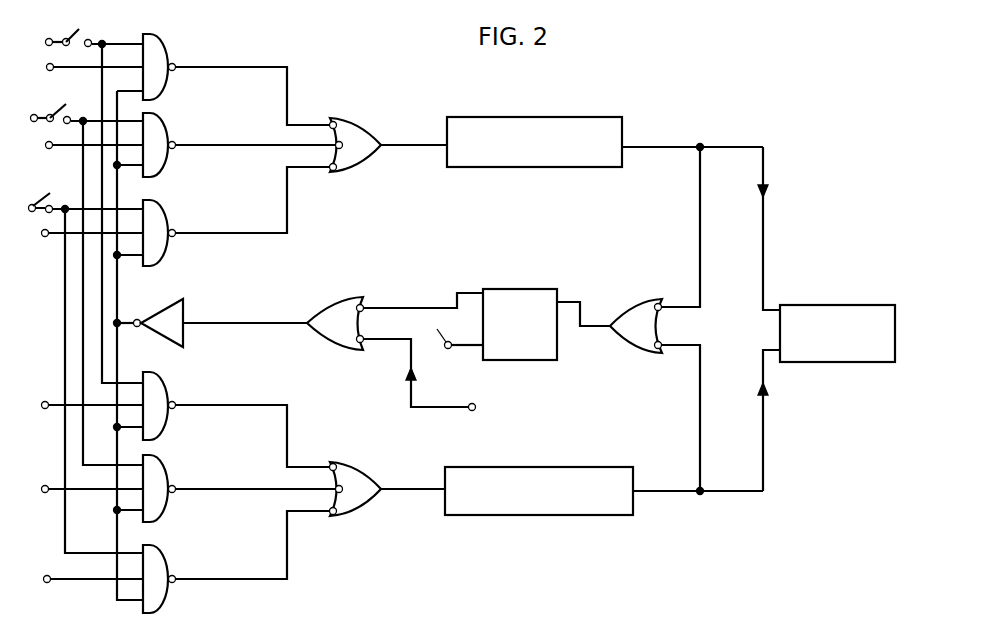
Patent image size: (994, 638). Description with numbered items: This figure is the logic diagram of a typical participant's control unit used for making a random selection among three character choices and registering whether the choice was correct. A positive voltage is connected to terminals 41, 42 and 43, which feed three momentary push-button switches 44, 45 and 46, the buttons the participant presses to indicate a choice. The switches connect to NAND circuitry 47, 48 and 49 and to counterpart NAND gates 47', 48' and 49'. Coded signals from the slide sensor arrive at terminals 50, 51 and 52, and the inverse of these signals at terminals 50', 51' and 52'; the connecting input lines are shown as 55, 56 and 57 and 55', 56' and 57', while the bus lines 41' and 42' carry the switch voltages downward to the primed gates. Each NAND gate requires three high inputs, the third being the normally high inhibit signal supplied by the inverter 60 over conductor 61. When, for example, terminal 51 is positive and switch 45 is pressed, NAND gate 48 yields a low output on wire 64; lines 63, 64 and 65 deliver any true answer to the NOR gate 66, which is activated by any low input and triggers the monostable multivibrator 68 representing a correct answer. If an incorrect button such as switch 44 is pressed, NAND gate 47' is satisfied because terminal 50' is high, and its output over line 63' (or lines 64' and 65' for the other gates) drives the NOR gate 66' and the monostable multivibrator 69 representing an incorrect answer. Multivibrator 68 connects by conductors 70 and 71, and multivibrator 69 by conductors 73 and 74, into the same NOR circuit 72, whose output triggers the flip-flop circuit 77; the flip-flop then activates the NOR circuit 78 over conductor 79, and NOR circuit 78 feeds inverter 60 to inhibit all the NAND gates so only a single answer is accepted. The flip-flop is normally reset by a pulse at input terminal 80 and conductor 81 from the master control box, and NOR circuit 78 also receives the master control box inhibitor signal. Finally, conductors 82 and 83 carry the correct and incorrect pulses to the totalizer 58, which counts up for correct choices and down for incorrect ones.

The terminal 41 is at (48, 24).
The momentary push button switch 44 is at (77, 31).
The input line from switch 50 55 is at (98, 39).
The NAND gate 47 is at (172, 60).
The output line 63 is at (252, 72).
The terminal 50 is at (39, 58).
The terminal 42 is at (39, 103).
The momentary push button switch 45 is at (62, 107).
The terminal 51 is at (39, 155).
The input line from switch 51 56 is at (98, 160).
The terminal 43 is at (31, 203).
The momentary push button switch 46 is at (46, 200).
The terminal 52 is at (37, 251).
The input line from switch 52 57 is at (100, 203).
The NAND gate 48 is at (174, 146).
The wire 64 is at (255, 121).
The NAND gate 49 is at (174, 232).
The output line 65 is at (252, 200).
The conductor 61 is at (119, 291).
The inverter 60 is at (176, 333).
The NOR gate 66 is at (389, 140).
The monostable multivibrator 68 is at (540, 116).
The conductor 70 is at (651, 147).
The conductor 71 is at (698, 215).
The conductor 82 is at (765, 232).
The totalizer 58 is at (851, 304).
The conductor 83 is at (765, 420).
The NOR circuit 72 is at (635, 330).
The flip-flop circuit 77 is at (513, 294).
The conductor 79 is at (435, 307).
The NOR circuit 78 is at (341, 300).
The input terminal 80 is at (448, 349).
The conductor 81 is at (467, 344).
The conductor 74 is at (698, 400).
The conductor 73 is at (662, 492).
The monostable multivibrator 69 is at (585, 516).
The NOR gate 66' is at (388, 488).
The terminal 50' is at (38, 385).
The input line from switch 50' 55' is at (84, 423).
The bus line from switch 41 41' is at (124, 212).
The NAND gate 47' is at (175, 401).
The output line 63' is at (252, 414).
The bus line from switch 42 42' is at (130, 292).
The output line 64' is at (255, 475).
The terminal 51' is at (38, 506).
The input line from switch 51' 56' is at (96, 507).
The NAND gate 48' is at (174, 492).
The terminal 52' is at (41, 603).
The input line from switch 52' 57' is at (97, 604).
The NAND gate 49' is at (182, 583).
The output line 65' is at (252, 545).